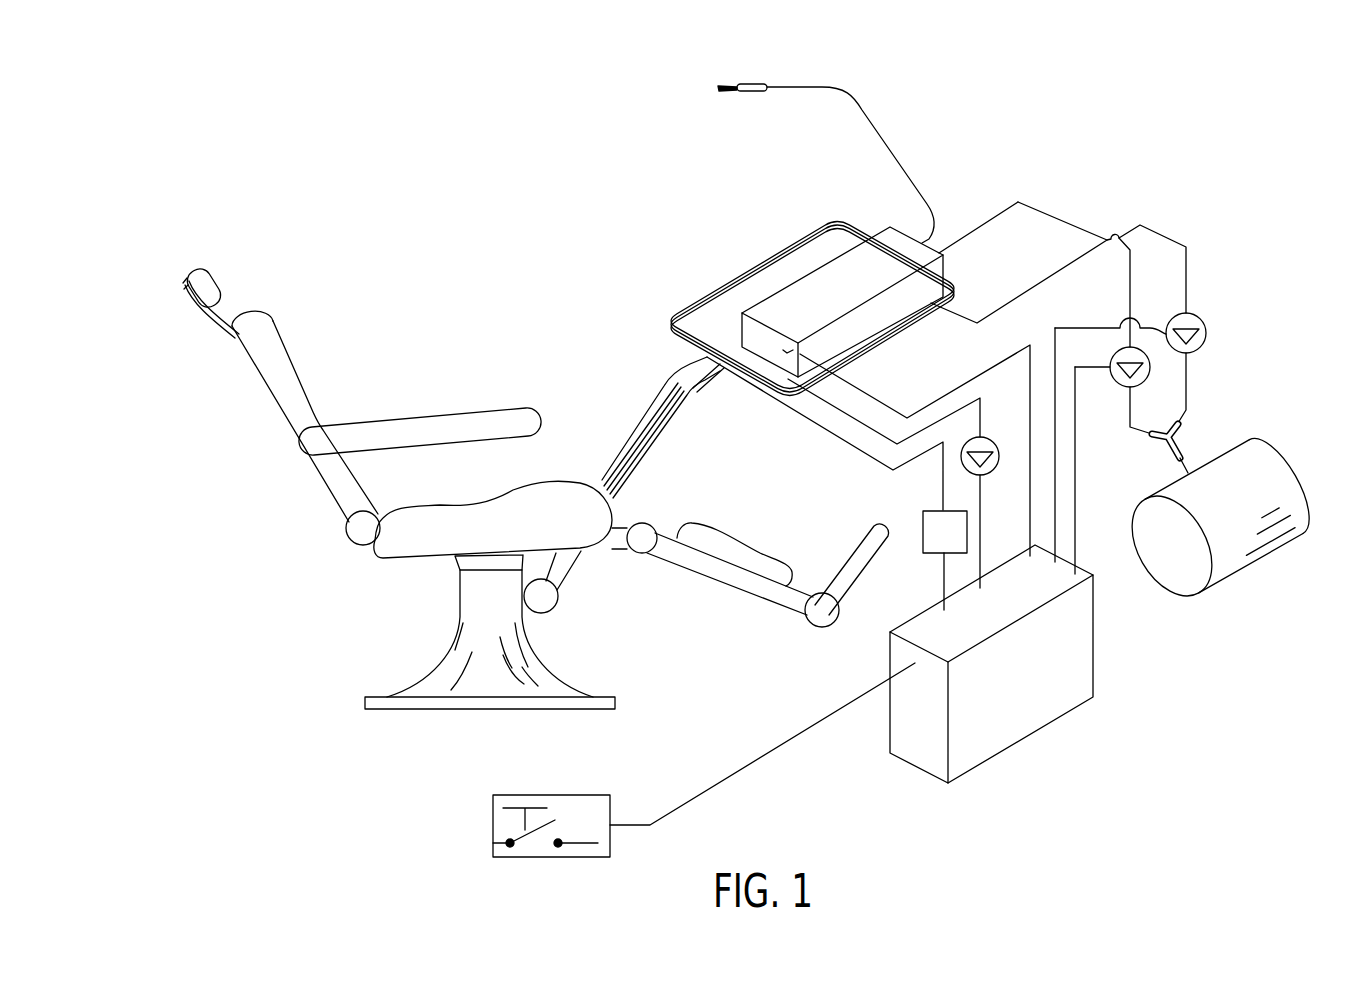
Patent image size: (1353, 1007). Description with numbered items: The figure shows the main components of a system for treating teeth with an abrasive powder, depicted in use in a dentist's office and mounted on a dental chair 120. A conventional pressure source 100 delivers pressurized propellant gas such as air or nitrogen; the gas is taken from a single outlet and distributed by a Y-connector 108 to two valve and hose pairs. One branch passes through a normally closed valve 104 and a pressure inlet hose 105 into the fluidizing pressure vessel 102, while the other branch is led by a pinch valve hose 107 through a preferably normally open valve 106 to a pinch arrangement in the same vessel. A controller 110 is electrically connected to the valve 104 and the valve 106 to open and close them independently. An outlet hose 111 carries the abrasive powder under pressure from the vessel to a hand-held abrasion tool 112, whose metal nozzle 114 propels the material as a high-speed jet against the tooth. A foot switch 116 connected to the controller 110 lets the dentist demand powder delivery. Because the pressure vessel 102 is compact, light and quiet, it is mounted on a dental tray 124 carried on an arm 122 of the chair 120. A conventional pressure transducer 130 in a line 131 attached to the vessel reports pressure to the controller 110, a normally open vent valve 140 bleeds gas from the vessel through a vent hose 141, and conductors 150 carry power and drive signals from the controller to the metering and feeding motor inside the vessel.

The pressure source 100 is at (1263, 457).
The fluidizing pressure vessel 102 is at (770, 297).
The valve 104 is at (1118, 384).
The pressure inlet hose 105 is at (1060, 218).
The valve 106 is at (1201, 314).
The pinch valve hose 107 is at (1165, 230).
The Y-connector 108 is at (1183, 441).
The controller 110 is at (921, 770).
The outlet hose 111 is at (863, 112).
The hand-held abrasion tool 112 is at (748, 84).
The metal nozzle 114 is at (719, 88).
The foot switch 116 is at (558, 795).
The dental chair 120 is at (315, 400).
The arm 122 is at (436, 414).
The dental tray 124 is at (680, 310).
The pressure transducer 130 is at (928, 511).
The line 131 is at (780, 407).
The vent valve 140 is at (993, 442).
The vent hose 141 is at (840, 413).
The conductors 150 is at (987, 370).